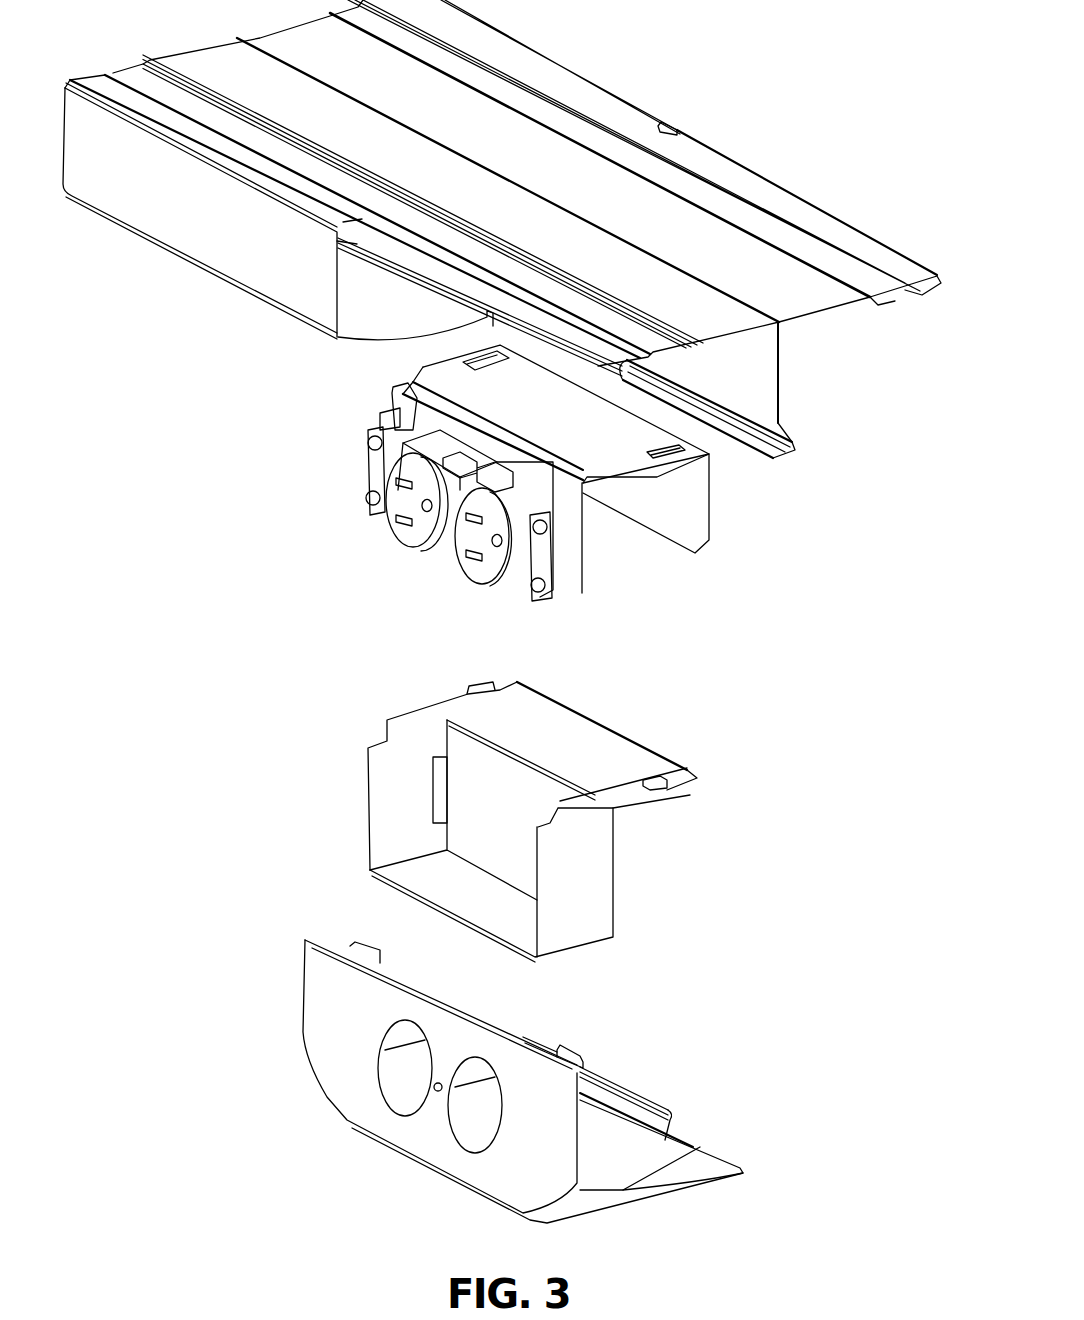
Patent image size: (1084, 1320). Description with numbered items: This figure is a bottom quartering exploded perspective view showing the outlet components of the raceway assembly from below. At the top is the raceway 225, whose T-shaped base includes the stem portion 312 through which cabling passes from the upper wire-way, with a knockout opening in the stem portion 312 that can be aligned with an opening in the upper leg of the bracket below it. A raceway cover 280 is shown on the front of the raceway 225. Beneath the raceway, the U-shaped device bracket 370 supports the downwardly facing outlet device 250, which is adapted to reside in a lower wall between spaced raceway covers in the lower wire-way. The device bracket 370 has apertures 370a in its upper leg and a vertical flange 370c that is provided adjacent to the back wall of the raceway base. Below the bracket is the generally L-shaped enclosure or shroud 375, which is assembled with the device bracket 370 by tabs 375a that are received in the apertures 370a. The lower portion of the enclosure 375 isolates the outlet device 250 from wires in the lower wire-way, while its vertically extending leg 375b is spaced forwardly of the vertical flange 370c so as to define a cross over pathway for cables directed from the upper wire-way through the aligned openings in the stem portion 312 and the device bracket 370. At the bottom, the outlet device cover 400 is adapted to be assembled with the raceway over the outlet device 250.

The raceway 225 is at (751, 112).
The T-shaped base stem portion 312 is at (781, 367).
The cover 280 is at (290, 278).
The outlet device 250 is at (338, 537).
The U-shaped device bracket 370 is at (638, 542).
The apertures 370a is at (493, 360).
The vertical flange 370c is at (607, 462).
The enclosure 375 is at (340, 787).
The tabs 375a is at (468, 690).
The vertically extending leg 375b is at (605, 753).
The outlet device cover 400 is at (652, 1063).